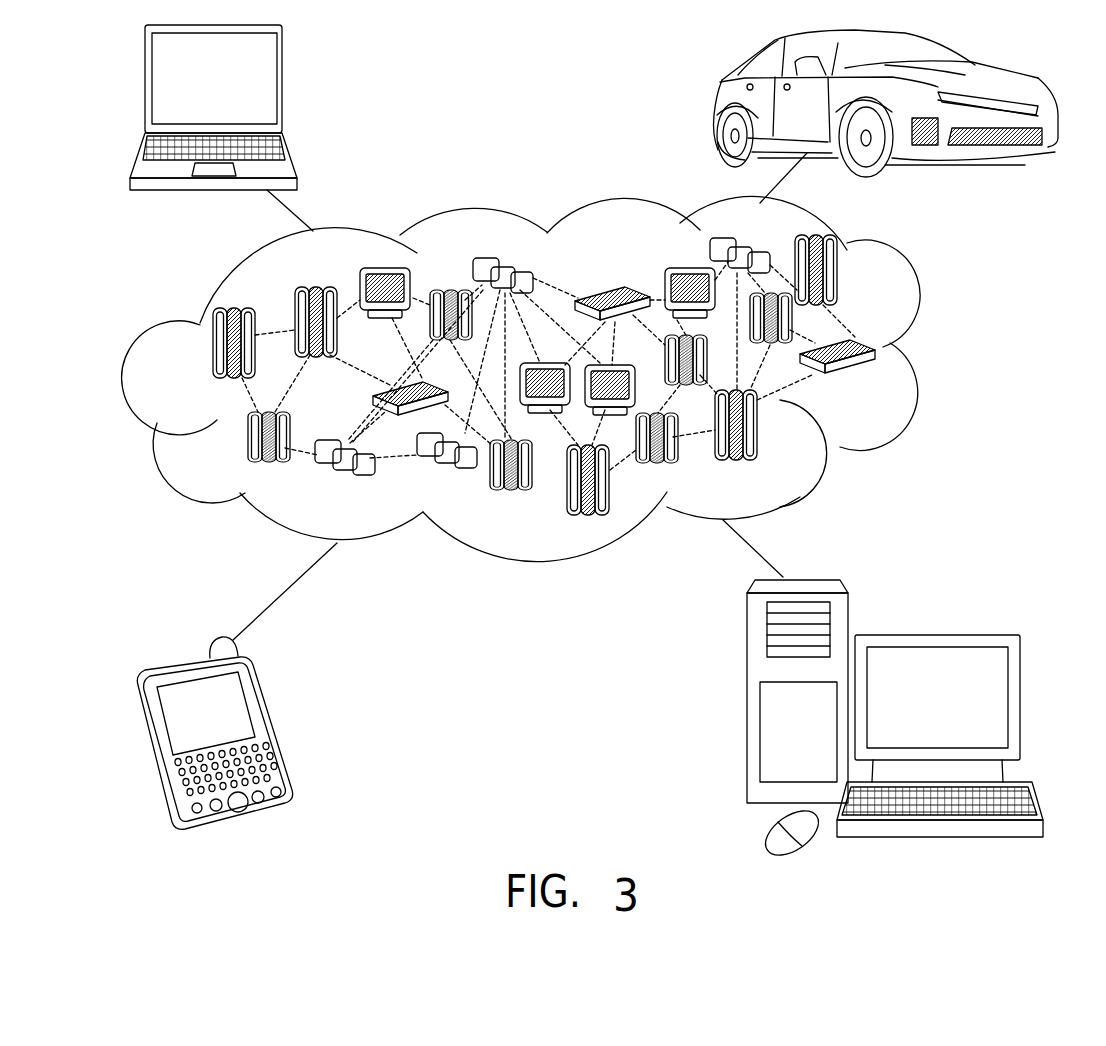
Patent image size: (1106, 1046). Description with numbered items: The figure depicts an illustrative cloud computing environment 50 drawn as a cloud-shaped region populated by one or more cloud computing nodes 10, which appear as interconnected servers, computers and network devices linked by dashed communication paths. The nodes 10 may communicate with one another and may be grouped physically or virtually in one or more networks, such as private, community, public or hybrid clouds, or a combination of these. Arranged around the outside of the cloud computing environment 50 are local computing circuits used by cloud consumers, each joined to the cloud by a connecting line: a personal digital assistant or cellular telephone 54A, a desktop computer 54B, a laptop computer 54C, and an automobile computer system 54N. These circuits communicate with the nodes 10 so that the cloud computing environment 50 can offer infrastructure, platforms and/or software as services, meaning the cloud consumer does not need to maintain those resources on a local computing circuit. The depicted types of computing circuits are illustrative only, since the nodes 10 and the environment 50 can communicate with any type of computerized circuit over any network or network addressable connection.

The cloud computing node 10 is at (884, 382).
The cloud computing environment 50 is at (556, 378).
The personal digital assistant or cellular telephone 54A is at (270, 724).
The desktop computer 54B is at (933, 635).
The laptop computer 54C is at (282, 91).
The automobile computer system 54N is at (720, 103).